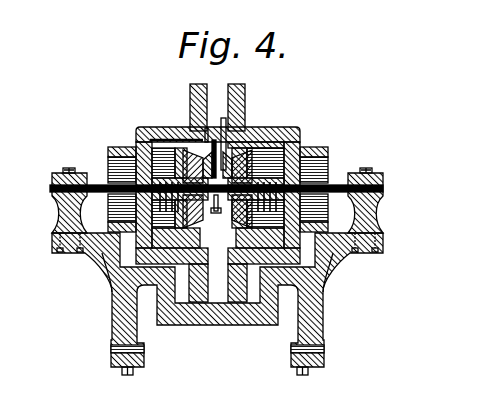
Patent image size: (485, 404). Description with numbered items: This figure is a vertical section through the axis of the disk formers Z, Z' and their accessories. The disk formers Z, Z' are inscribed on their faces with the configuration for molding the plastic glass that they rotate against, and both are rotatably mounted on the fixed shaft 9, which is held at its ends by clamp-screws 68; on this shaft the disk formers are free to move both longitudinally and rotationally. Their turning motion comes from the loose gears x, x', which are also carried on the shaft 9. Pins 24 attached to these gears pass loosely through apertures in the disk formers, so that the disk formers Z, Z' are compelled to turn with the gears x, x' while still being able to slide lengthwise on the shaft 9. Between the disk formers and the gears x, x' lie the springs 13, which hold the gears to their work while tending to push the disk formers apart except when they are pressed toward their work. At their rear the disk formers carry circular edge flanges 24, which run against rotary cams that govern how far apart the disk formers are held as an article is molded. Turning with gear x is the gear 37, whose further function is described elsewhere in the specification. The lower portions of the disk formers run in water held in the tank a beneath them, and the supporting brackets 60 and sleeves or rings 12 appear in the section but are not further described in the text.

The fixed shaft 9 is at (50, 189).
The ring 12 is at (327, 153).
The springs 13 is at (139, 130).
The pins 24 is at (112, 158).
The gear 37 is at (140, 253).
The bracket 60 is at (53, 217).
The clamp-screws 68 is at (69, 168).
The tank a is at (232, 325).
The gear x is at (191, 136).
The gear x' is at (240, 125).
The disk former Z is at (181, 102).
The disk former Z' is at (255, 102).